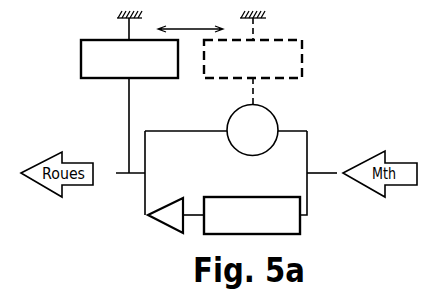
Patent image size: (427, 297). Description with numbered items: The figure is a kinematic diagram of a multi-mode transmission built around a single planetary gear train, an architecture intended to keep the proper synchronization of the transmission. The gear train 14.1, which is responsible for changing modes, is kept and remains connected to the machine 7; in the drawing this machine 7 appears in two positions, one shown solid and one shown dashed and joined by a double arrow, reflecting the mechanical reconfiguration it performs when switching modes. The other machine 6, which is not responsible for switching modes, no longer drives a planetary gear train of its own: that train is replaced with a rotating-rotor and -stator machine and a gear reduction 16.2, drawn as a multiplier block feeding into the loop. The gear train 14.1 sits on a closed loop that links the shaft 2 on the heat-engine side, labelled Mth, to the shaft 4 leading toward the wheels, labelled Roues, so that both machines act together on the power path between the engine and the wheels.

The machine 7 is at (81, 59).
The gear train 14.1 is at (277, 122).
The output shaft to wheels 4 is at (122, 175).
The input shaft from heat engine 2 is at (323, 176).
The gear reduction 16.2 is at (162, 223).
The machine 6 is at (302, 229).